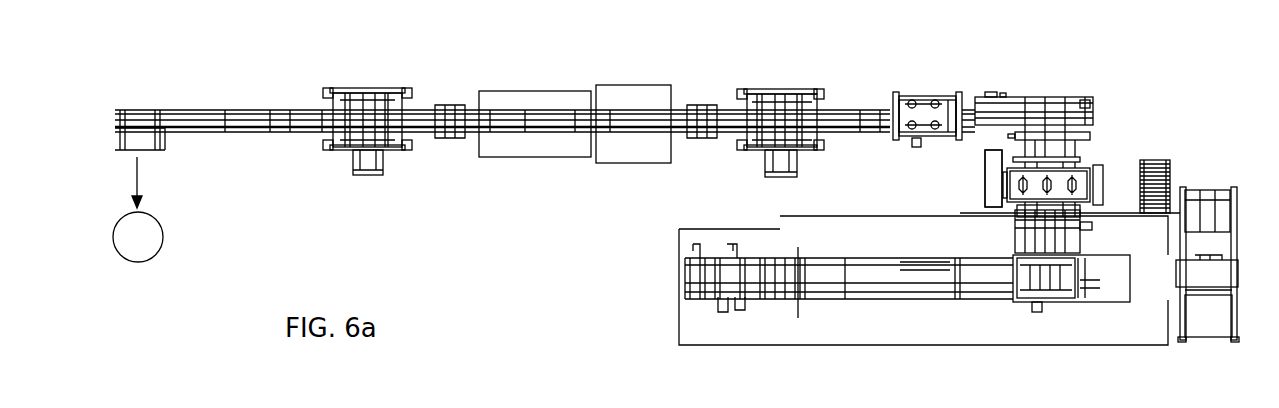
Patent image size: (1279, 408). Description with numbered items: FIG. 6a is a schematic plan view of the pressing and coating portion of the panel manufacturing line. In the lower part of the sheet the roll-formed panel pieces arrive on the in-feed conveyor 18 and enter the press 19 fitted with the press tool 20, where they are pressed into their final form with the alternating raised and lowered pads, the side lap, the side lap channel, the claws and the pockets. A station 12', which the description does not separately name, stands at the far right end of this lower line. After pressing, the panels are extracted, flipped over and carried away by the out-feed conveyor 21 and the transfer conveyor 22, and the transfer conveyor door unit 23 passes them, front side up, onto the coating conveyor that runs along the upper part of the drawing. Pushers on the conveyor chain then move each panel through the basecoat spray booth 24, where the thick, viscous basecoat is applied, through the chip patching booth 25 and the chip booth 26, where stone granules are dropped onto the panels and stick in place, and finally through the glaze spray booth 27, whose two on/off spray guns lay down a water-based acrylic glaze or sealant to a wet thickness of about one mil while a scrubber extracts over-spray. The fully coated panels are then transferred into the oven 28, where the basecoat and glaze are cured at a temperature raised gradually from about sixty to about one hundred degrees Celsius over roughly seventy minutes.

The tire loading station 12' is at (1219, 280).
The in-feed conveyor 18 is at (1015, 228).
The press 19 is at (988, 188).
The press tool 20 is at (988, 188).
The out-feed conveyor 21 is at (1080, 158).
The transfer conveyor 22 is at (1080, 122).
The transfer conveyor door unit 23 is at (912, 94).
The basecoat spray booth 24 is at (780, 89).
The chip patching booth 25 is at (632, 85).
The chip booth 26 is at (565, 91).
The glaze spray booth 27 is at (363, 88).
The oven 28 is at (162, 232).